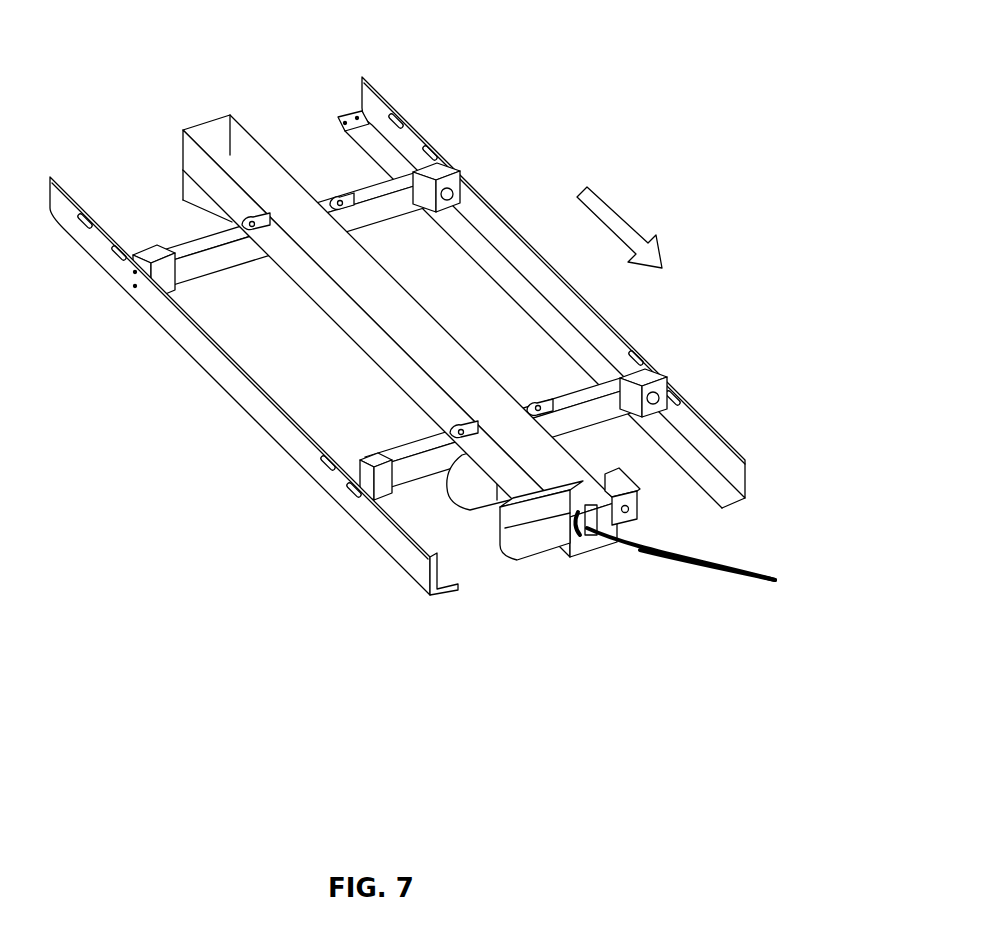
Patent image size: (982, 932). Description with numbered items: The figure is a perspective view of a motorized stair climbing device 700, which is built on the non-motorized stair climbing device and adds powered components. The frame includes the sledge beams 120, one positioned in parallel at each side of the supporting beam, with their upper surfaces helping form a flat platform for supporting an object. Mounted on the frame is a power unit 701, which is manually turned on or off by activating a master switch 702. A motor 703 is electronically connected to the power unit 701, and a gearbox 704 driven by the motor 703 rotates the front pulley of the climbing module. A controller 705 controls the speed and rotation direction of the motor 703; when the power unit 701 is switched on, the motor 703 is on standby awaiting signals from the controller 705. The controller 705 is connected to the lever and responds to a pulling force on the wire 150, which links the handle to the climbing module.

The motorized stair climbing device 700 is at (645, 58).
The sledge beam 120 is at (242, 163).
The power unit 701 is at (193, 195).
The master switch 702 is at (605, 530).
The motor 703 is at (483, 467).
The gearbox 704 is at (547, 543).
The controller 705 is at (613, 483).
The wire 150 is at (707, 562).